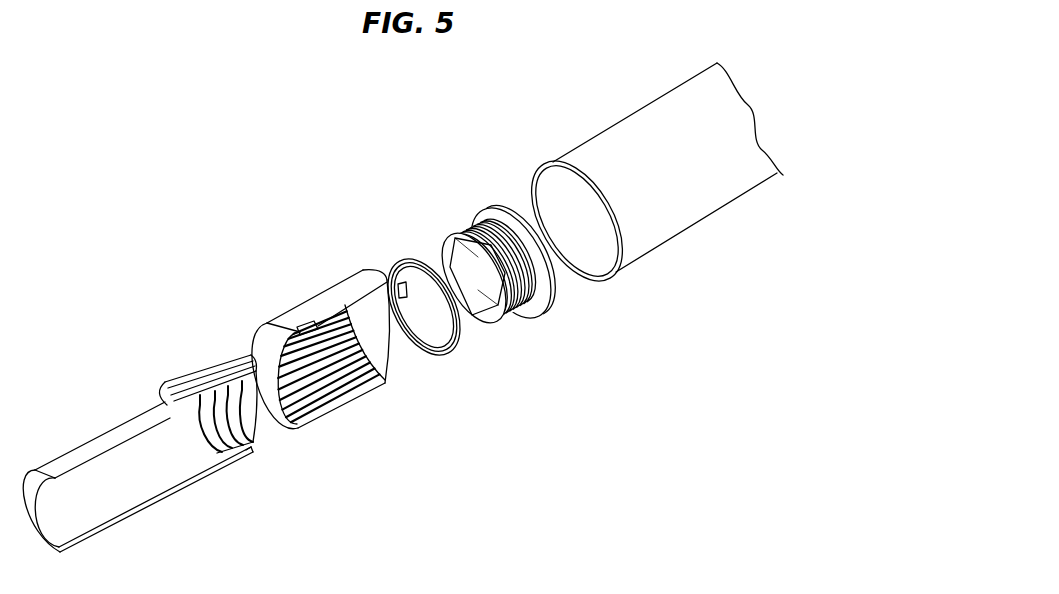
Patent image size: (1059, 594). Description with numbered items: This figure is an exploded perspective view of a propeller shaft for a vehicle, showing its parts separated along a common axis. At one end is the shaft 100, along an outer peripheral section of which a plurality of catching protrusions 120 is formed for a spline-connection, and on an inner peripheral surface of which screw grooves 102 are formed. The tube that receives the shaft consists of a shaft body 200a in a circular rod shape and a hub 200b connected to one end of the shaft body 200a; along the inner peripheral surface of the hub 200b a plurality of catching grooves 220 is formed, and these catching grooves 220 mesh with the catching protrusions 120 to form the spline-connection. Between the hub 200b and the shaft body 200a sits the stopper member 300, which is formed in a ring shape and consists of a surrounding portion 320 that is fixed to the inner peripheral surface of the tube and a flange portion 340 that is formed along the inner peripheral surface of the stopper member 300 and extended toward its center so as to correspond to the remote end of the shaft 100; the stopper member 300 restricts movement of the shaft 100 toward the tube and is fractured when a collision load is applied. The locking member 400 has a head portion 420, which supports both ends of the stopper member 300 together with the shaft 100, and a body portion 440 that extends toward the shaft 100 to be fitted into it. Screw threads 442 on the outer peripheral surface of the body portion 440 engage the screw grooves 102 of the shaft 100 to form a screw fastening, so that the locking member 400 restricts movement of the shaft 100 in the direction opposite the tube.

The shaft 100 is at (127, 420).
The screw grooves 102 is at (250, 458).
The catching protrusions 120 is at (200, 369).
The shaft body 200a is at (696, 205).
The hub 200b is at (321, 341).
The catching grooves 220 is at (340, 408).
The stopper member 300 is at (427, 296).
The surrounding portion 320 is at (457, 357).
The flange portion 340 is at (378, 276).
The locking member 400 is at (520, 260).
The head portion 420 is at (533, 236).
The body portion 440 is at (477, 328).
The screw threads 442 is at (556, 298).